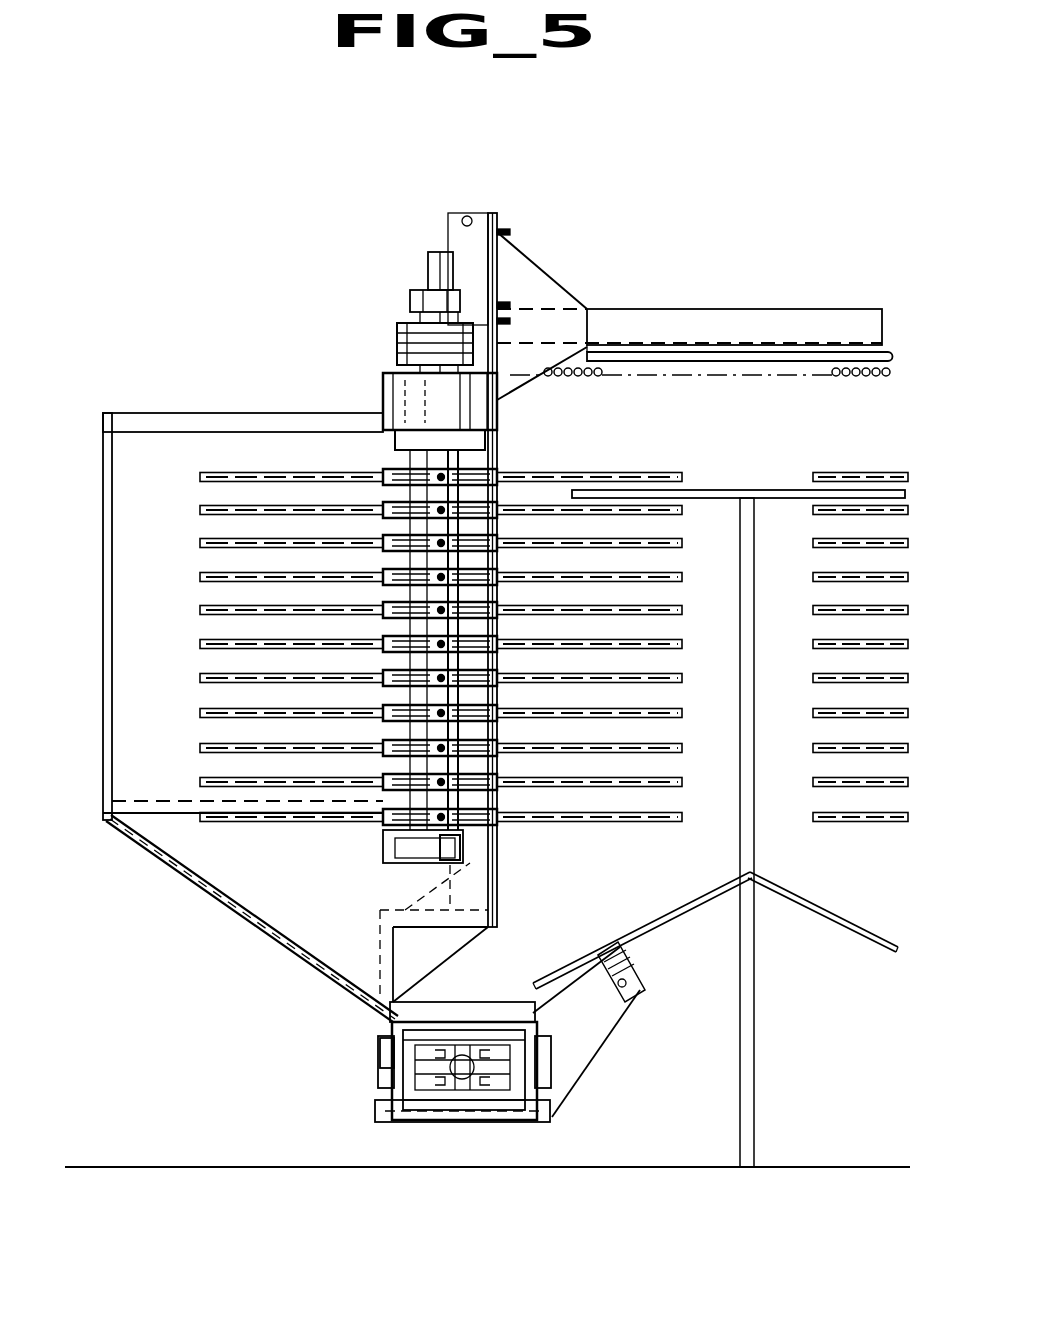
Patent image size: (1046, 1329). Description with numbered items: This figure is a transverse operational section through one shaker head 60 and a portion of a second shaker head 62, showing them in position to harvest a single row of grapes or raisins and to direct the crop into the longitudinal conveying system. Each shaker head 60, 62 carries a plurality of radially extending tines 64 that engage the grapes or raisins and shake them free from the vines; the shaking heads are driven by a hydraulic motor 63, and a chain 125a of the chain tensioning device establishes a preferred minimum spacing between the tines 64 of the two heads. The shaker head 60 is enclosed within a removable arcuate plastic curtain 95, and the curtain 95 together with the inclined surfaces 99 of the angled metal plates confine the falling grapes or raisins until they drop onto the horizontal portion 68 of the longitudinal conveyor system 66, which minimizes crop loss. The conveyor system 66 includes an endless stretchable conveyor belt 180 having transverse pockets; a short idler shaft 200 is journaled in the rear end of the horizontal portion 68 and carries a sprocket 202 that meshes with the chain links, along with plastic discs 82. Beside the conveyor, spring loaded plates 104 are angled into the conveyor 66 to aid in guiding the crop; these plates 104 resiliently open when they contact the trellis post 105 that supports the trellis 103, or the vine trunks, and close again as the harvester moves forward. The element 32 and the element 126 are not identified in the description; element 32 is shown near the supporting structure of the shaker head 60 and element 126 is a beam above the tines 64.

The support bracket 32 is at (500, 258).
The hydraulic motor 63 is at (432, 277).
The shaker head 60 is at (358, 408).
The tines 64 is at (202, 475).
The arcuate plastic curtain 95 is at (103, 534).
The inclined surfaces 99 is at (208, 893).
The beam 126 is at (740, 358).
The chain 125a is at (593, 376).
The shaker head 62 is at (893, 463).
The trellis 103 is at (710, 488).
The trellis post 105 is at (752, 978).
The spring loaded plates 104 is at (790, 895).
The longitudinal conveyor system 66 is at (565, 1097).
The horizontal portion 68 is at (423, 1033).
The endless stretchable conveyor belt 180 is at (470, 1018).
The idler shaft 200 is at (383, 1040).
The plastic discs 82 is at (387, 1085).
The sprocket 202 is at (462, 1100).